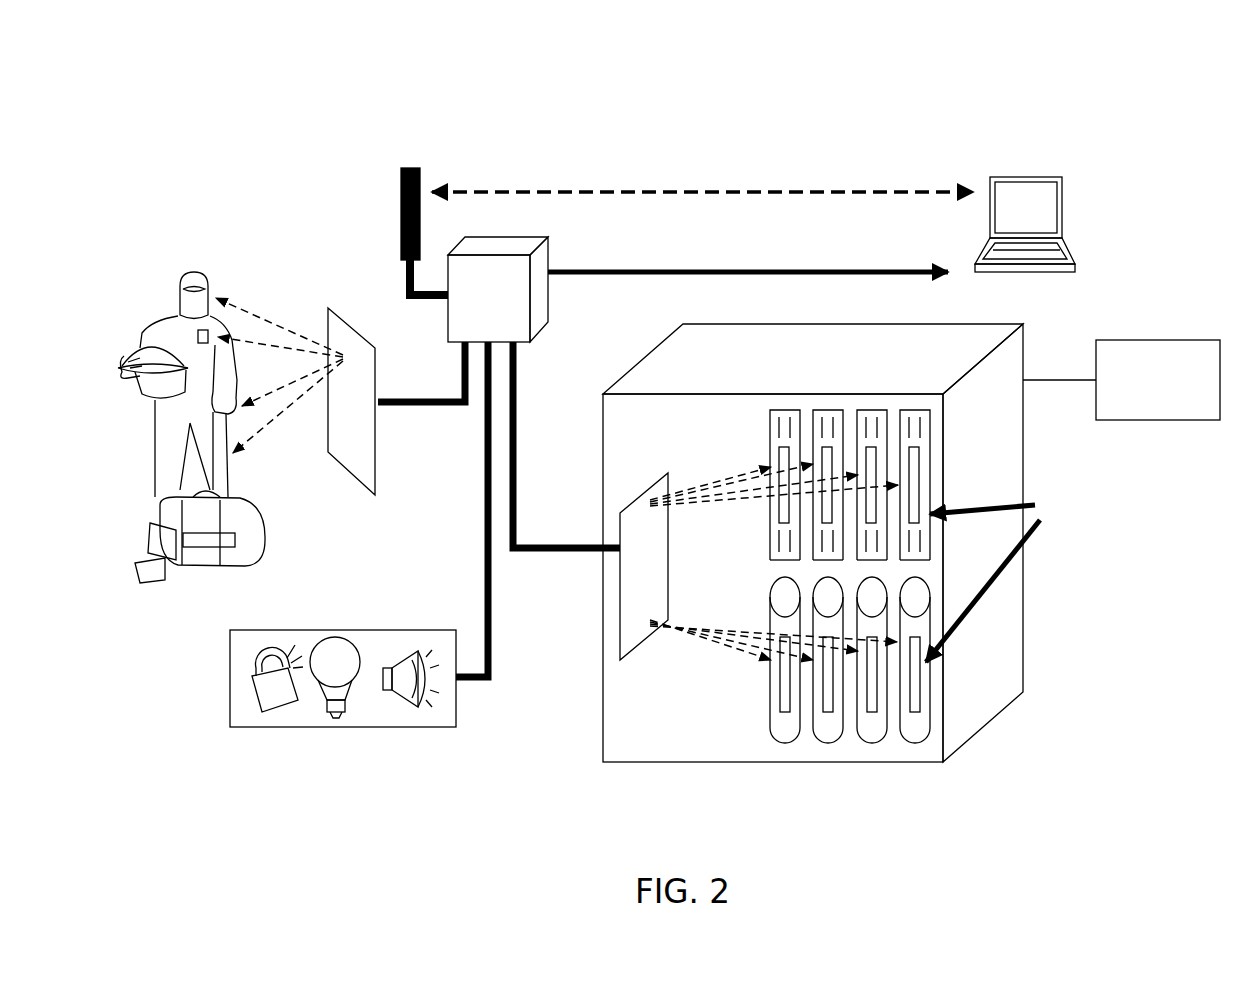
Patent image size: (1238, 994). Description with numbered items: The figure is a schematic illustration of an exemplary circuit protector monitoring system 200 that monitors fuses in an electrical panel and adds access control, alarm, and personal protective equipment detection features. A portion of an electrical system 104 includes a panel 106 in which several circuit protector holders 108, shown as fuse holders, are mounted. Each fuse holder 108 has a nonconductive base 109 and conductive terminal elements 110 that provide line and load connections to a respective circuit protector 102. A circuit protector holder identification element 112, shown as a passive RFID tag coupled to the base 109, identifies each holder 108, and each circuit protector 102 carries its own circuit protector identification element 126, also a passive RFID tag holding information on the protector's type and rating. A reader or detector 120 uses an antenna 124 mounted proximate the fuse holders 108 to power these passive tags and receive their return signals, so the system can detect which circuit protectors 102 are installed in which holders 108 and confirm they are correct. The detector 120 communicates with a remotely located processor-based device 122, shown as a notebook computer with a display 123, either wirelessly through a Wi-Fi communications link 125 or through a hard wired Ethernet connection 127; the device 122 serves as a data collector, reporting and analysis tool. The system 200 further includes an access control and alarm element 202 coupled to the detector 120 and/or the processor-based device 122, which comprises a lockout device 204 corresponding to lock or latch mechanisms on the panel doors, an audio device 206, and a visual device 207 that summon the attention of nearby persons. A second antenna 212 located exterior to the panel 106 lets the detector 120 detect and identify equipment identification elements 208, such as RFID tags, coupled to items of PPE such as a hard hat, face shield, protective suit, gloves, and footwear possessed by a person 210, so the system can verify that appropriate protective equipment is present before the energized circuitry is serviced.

The circuit protector monitoring system 200 is at (960, 95).
The Wi-Fi communications link 125 is at (858, 190).
The Ethernet connection 127 is at (897, 268).
The processor-based device 122 is at (1057, 205).
The display 123 is at (1062, 208).
The electrical system 104 is at (1158, 340).
The panel 106 is at (803, 562).
The reader or detector 120 is at (540, 350).
The circuit protector holder 108 is at (784, 410).
The nonconductive base 109 is at (770, 553).
The conductive terminal elements 110 is at (920, 428).
The circuit protector holder identification element 112 is at (778, 512).
The circuit protector 102 is at (786, 745).
The circuit protector identification element 126 is at (778, 705).
The antenna 124 is at (620, 653).
The antenna 212 is at (345, 305).
The person 210 is at (140, 332).
The equipment identification element 208 is at (218, 296).
The access control and alarm element 202 is at (343, 708).
The lockout device 204 is at (272, 712).
The audio device 206 is at (412, 712).
The visual device 207 is at (333, 720).